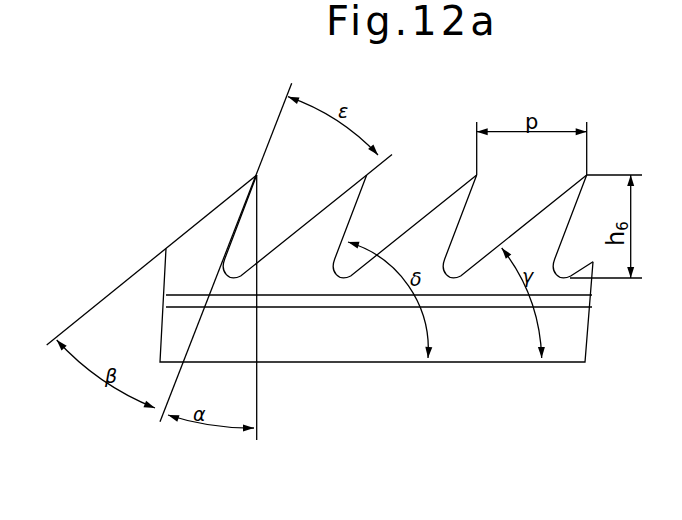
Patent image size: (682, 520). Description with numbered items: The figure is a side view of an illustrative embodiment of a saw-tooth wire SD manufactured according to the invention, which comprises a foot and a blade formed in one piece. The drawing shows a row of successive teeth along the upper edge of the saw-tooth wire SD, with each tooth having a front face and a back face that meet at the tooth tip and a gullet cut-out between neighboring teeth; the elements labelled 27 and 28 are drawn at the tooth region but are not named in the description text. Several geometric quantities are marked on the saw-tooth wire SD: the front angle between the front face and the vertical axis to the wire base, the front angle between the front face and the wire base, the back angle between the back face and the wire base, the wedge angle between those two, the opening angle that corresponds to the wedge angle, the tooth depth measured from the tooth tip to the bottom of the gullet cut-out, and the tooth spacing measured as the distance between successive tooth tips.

The saw tooth 27 is at (220, 222).
The tooth back 28 is at (383, 210).
The saw-tooth wire SD is at (467, 377).